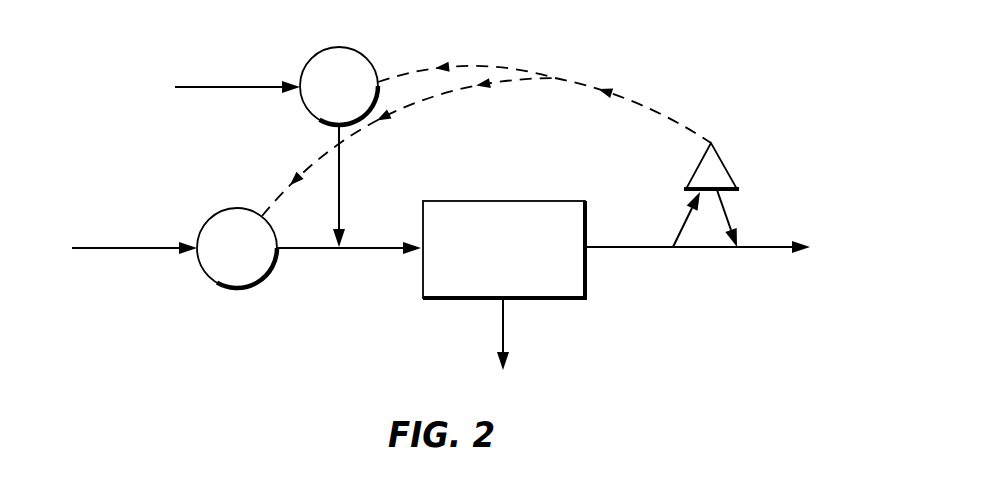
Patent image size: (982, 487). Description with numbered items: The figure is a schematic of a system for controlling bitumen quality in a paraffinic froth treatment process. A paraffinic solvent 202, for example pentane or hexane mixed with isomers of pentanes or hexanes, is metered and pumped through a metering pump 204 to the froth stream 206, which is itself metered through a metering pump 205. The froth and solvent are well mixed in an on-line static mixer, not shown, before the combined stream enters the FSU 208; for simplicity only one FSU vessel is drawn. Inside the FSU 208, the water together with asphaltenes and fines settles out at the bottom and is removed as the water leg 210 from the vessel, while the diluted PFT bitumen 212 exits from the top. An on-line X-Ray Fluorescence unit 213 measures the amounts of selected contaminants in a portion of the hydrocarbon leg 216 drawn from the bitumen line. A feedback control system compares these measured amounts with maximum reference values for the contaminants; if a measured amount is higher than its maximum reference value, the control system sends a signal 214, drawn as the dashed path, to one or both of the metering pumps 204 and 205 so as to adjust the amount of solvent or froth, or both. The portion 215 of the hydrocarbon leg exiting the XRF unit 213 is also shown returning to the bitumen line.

The paraffinic solvent 202 is at (231, 81).
The metering pump 204 is at (366, 56).
The metering pump 205 is at (214, 215).
The froth stream 206 is at (123, 241).
The FSU 208 is at (550, 201).
The water leg 210 is at (500, 331).
The diluted PFT bitumen 212 is at (622, 248).
The X-Ray Fluorescence unit 213 is at (721, 162).
The signal 214 is at (562, 58).
The portion of the hydrocarbon leg exiting the XRF unit 215 is at (733, 207).
The portion of the hydrocarbon leg 216 is at (681, 224).